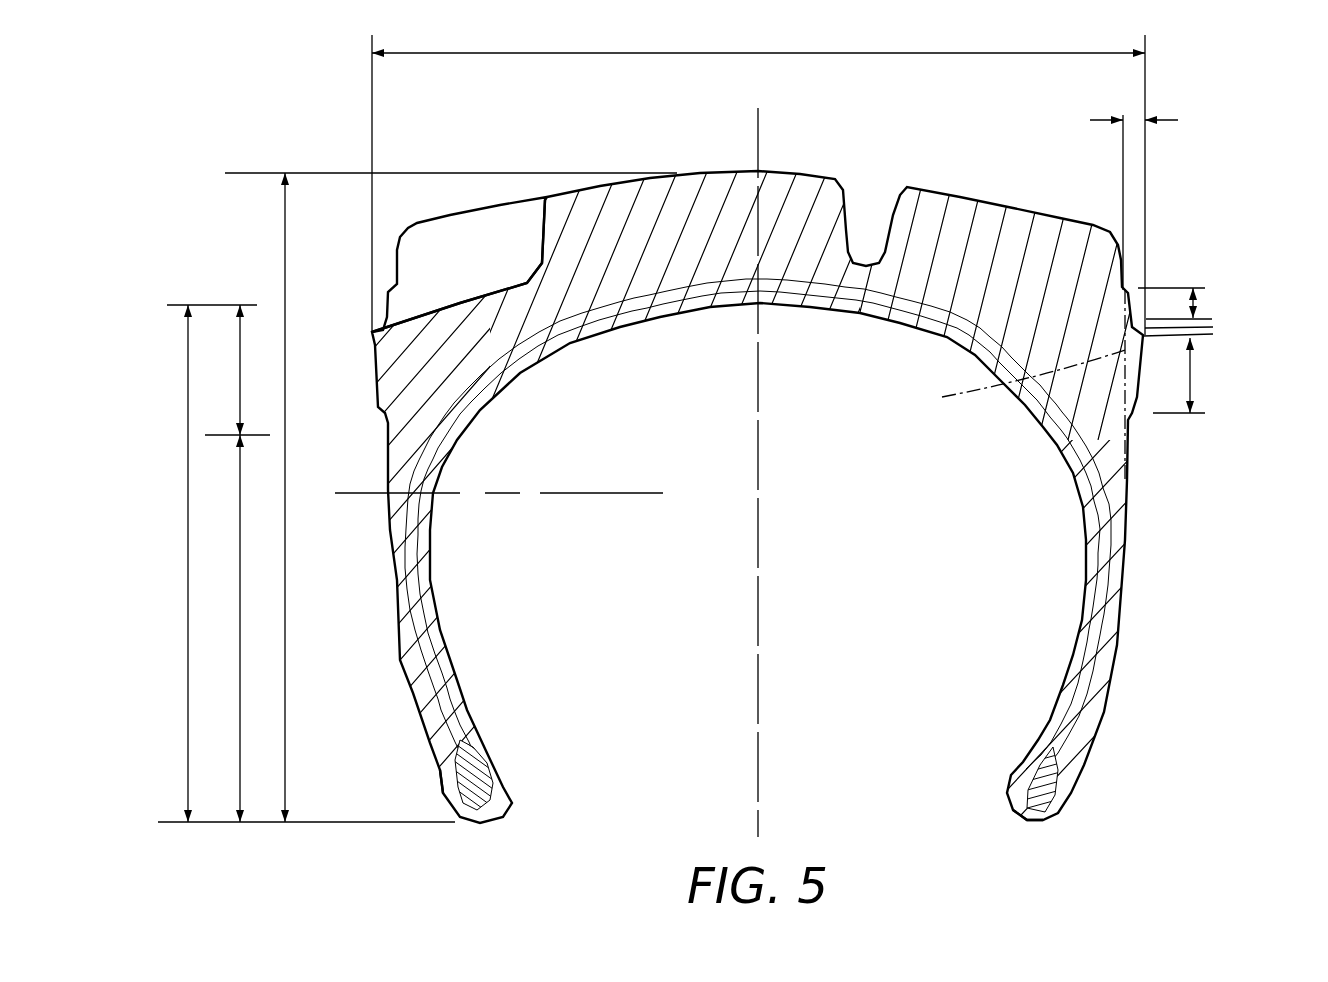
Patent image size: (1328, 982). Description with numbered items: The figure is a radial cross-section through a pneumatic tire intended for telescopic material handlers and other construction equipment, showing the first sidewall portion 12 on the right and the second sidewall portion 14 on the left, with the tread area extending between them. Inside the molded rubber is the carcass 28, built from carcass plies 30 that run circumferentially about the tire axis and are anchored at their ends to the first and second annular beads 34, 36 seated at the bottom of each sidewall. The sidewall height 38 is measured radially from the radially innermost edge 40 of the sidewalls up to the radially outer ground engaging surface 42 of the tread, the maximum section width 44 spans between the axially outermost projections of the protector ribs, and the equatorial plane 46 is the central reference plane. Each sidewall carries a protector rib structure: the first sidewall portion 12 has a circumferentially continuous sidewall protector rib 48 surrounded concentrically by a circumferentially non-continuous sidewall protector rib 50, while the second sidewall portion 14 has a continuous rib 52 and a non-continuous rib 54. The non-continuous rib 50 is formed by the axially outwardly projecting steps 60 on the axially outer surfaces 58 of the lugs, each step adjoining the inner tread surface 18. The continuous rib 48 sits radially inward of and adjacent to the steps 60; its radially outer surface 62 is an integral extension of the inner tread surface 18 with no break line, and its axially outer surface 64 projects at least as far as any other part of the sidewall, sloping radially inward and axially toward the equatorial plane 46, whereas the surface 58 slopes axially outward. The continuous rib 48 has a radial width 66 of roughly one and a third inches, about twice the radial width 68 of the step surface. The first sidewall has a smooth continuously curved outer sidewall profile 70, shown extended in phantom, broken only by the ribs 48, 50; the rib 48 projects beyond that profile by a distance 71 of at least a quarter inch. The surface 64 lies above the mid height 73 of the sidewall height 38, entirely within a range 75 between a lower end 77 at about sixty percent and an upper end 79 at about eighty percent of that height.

The first sidewall portion 12 is at (1112, 656).
The second sidewall portion 14 is at (410, 690).
The inner tread surface 18 is at (1221, 330).
The carcass 28 is at (1115, 560).
The carcass plies 30 is at (1103, 512).
The first annular bead 34 is at (1045, 798).
The second annular bead 36 is at (470, 812).
The sidewall height 38 is at (285, 550).
The radially innermost edge 40 is at (1030, 820).
The ground engaging surface 42 is at (760, 172).
The maximum section width 44 is at (646, 55).
The equatorial plane 46 is at (768, 112).
The circumferentially continuous sidewall protector rib 48 is at (1195, 431).
The circumferentially non-continuous sidewall protector rib 50 is at (1210, 263).
The circumferentially continuous sidewall protector rib 52 is at (346, 430).
The circumferentially non-continuous sidewall protector rib 54 is at (385, 305).
The axially outer surface 58 is at (1124, 255).
The axially outwardly projecting step 60 is at (1133, 305).
The radially outer surface 62 is at (1147, 331).
The axially outer surface 64 is at (1137, 400).
The radial width 66 is at (1192, 380).
The radial width 68 is at (1202, 300).
The outer sidewall profile 70 is at (1020, 377).
The distance 71 is at (1133, 118).
The mid height 73 is at (573, 493).
The range 75 is at (240, 387).
The lower end 77 is at (240, 607).
The upper end 79 is at (188, 705).